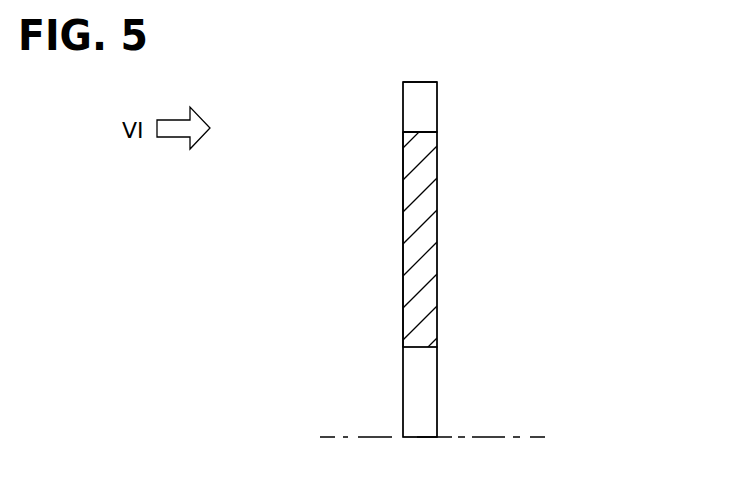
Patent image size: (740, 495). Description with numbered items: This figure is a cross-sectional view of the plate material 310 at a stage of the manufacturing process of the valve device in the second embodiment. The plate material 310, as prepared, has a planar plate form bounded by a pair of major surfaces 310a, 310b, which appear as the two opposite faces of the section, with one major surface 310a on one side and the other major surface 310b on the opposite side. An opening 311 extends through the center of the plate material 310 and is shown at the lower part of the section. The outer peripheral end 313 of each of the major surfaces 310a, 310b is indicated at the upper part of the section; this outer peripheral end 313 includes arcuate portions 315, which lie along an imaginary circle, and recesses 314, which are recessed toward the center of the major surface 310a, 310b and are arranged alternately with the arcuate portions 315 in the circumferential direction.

The plate material 310 is at (396, 80).
The outer peripheral end 313 is at (540, 40).
The arcuate portion 315 is at (423, 82).
The recess 314 is at (421, 131).
The major surface 310a is at (401, 197).
The major surface 310b is at (437, 197).
The opening 311 is at (415, 395).